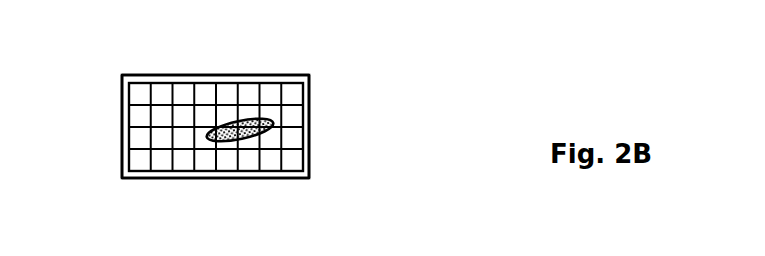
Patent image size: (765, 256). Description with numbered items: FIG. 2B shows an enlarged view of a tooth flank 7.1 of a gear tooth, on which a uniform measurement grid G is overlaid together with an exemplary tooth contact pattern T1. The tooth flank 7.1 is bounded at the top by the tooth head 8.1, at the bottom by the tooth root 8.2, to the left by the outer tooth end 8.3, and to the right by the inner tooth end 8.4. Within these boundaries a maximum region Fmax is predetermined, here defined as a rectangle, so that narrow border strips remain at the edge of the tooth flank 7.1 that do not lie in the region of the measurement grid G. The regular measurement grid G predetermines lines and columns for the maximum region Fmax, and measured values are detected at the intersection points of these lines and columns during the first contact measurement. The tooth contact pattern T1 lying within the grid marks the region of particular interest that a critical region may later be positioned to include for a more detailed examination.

The tooth flank 7.1 is at (80, 66).
The tooth head 8.1 is at (237, 75).
The tooth root 8.2 is at (238, 178).
The outer tooth end 8.3 is at (122, 132).
The inner tooth end 8.4 is at (309, 156).
The measurement grid G is at (215, 89).
The maximum region Fmax is at (305, 76).
The tooth contact pattern T1 is at (273, 125).